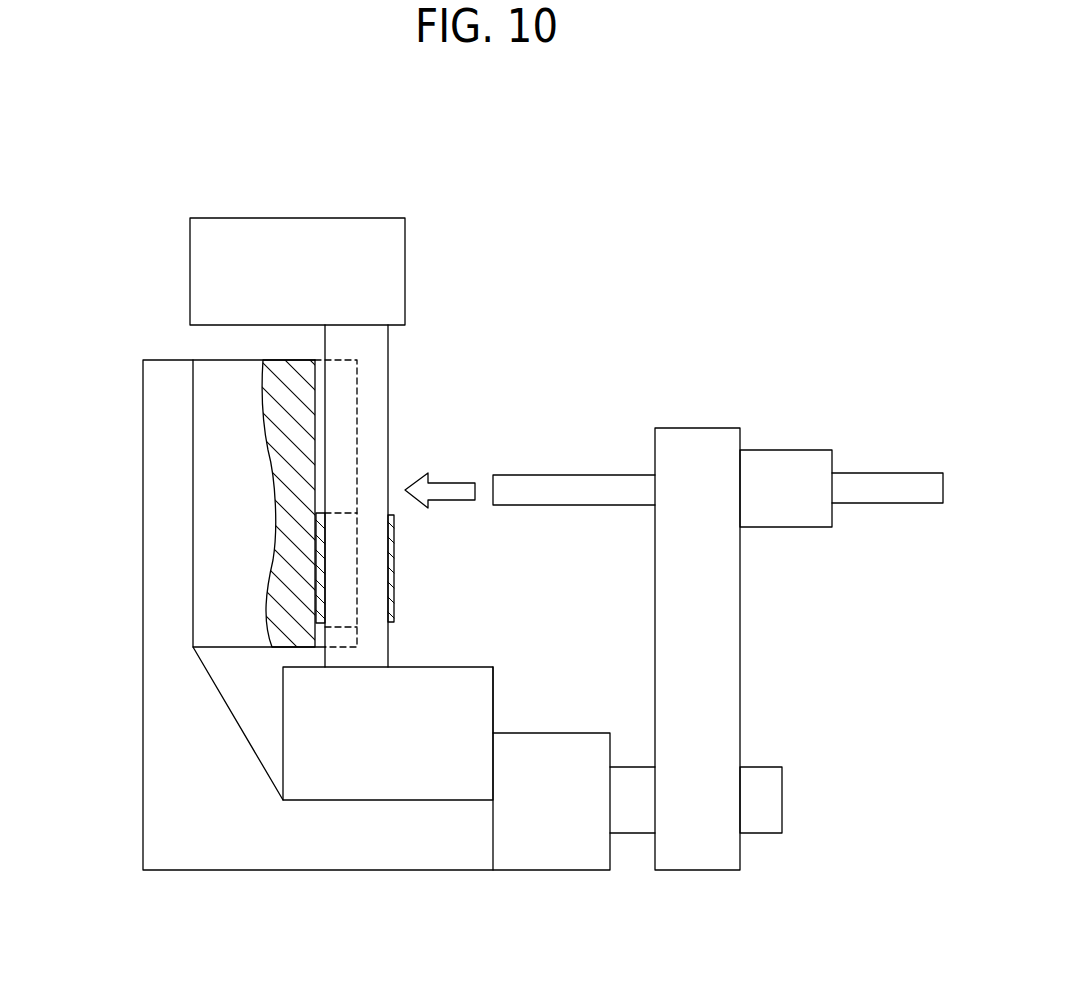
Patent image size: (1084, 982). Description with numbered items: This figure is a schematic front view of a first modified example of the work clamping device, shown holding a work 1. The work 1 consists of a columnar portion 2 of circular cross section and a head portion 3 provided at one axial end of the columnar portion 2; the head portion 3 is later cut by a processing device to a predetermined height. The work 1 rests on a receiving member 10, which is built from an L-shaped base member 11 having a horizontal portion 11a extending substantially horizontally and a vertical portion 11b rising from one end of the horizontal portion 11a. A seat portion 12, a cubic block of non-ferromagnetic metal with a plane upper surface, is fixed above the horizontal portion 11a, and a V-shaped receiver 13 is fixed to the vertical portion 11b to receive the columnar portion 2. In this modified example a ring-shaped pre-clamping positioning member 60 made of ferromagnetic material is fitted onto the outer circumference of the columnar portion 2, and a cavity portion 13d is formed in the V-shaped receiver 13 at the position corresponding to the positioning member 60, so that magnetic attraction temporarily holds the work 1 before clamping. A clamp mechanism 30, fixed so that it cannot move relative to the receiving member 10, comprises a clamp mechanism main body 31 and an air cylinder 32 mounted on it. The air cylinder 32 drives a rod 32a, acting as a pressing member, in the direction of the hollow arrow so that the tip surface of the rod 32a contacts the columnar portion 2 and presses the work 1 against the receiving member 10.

The work 1 is at (328, 392).
The columnar portion 2 is at (388, 393).
The head portion 3 is at (405, 272).
The receiving member 10 is at (321, 660).
The L-shaped base member 11 is at (321, 660).
The horizontal portion 11a is at (343, 872).
The vertical portion 11b is at (142, 590).
The seat portion 12 is at (494, 698).
The V-shaped receiver 13 is at (359, 489).
The cavity portion 13d is at (394, 529).
The clamp mechanism 30 is at (718, 614).
The clamp mechanism main body 31 is at (741, 718).
The air cylinder 32 is at (780, 448).
The rod 32a is at (585, 473).
The pre-clamping positioning member 60 is at (395, 596).